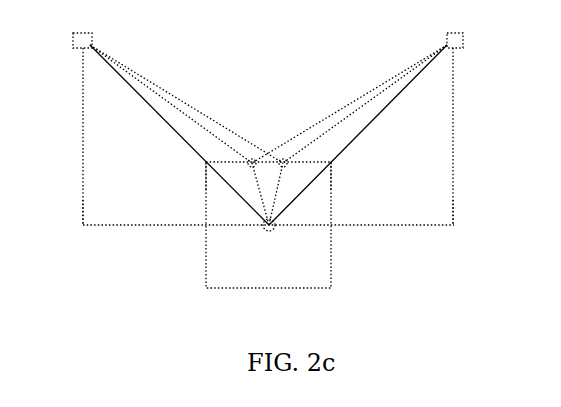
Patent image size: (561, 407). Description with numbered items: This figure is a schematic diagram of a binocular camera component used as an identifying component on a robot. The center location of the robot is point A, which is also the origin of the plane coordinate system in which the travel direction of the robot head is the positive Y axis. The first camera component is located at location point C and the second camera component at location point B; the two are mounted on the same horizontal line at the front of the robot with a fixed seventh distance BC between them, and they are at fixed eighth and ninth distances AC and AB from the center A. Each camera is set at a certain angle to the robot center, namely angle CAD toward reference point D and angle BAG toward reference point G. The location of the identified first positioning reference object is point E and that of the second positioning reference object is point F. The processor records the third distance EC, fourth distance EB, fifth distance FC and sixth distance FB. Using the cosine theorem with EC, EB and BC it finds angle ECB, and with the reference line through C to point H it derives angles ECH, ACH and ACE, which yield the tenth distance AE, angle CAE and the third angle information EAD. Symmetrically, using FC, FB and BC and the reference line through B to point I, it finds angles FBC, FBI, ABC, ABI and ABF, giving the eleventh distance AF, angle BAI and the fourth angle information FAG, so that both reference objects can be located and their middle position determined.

The center location of the robot A is at (268, 141).
The location point of the second camera component B is at (268, 135).
The location point of the first camera component C is at (268, 135).
The reference point defining angle CAD and angle EAD D is at (463, 219).
The location of the first positioning reference object E is at (463, 33).
The location of the second positioning reference object F is at (75, 35).
The reference point defining angle BAG and angle FAG G is at (71, 219).
The reference point defining angle ECH and angle ACH H is at (340, 168).
The reference point defining angle FBI, ABI and BAI I is at (194, 168).